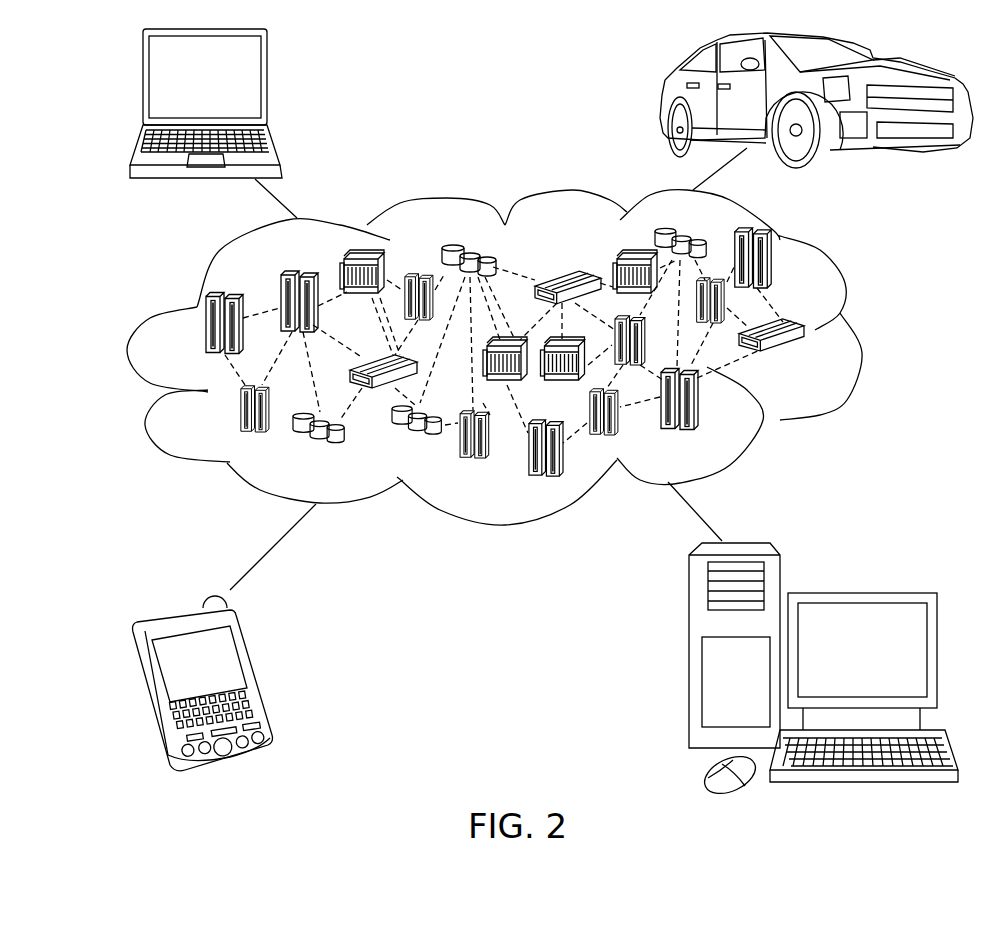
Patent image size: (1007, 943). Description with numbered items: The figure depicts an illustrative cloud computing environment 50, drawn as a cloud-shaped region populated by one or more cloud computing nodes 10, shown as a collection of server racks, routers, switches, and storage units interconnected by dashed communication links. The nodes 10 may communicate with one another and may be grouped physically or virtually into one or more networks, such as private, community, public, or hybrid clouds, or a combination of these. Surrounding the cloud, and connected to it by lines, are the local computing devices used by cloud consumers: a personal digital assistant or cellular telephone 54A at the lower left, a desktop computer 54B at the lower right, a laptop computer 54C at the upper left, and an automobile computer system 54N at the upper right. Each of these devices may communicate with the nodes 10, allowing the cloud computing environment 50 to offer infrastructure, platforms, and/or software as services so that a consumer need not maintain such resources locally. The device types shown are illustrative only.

The cloud computing node 10 is at (808, 359).
The cloud computing environment 50 is at (857, 333).
The personal digital assistant or cellular telephone 54A is at (267, 672).
The desktop computer 54B is at (860, 593).
The laptop computer 54C is at (267, 85).
The automobile computer system 54N is at (660, 97).